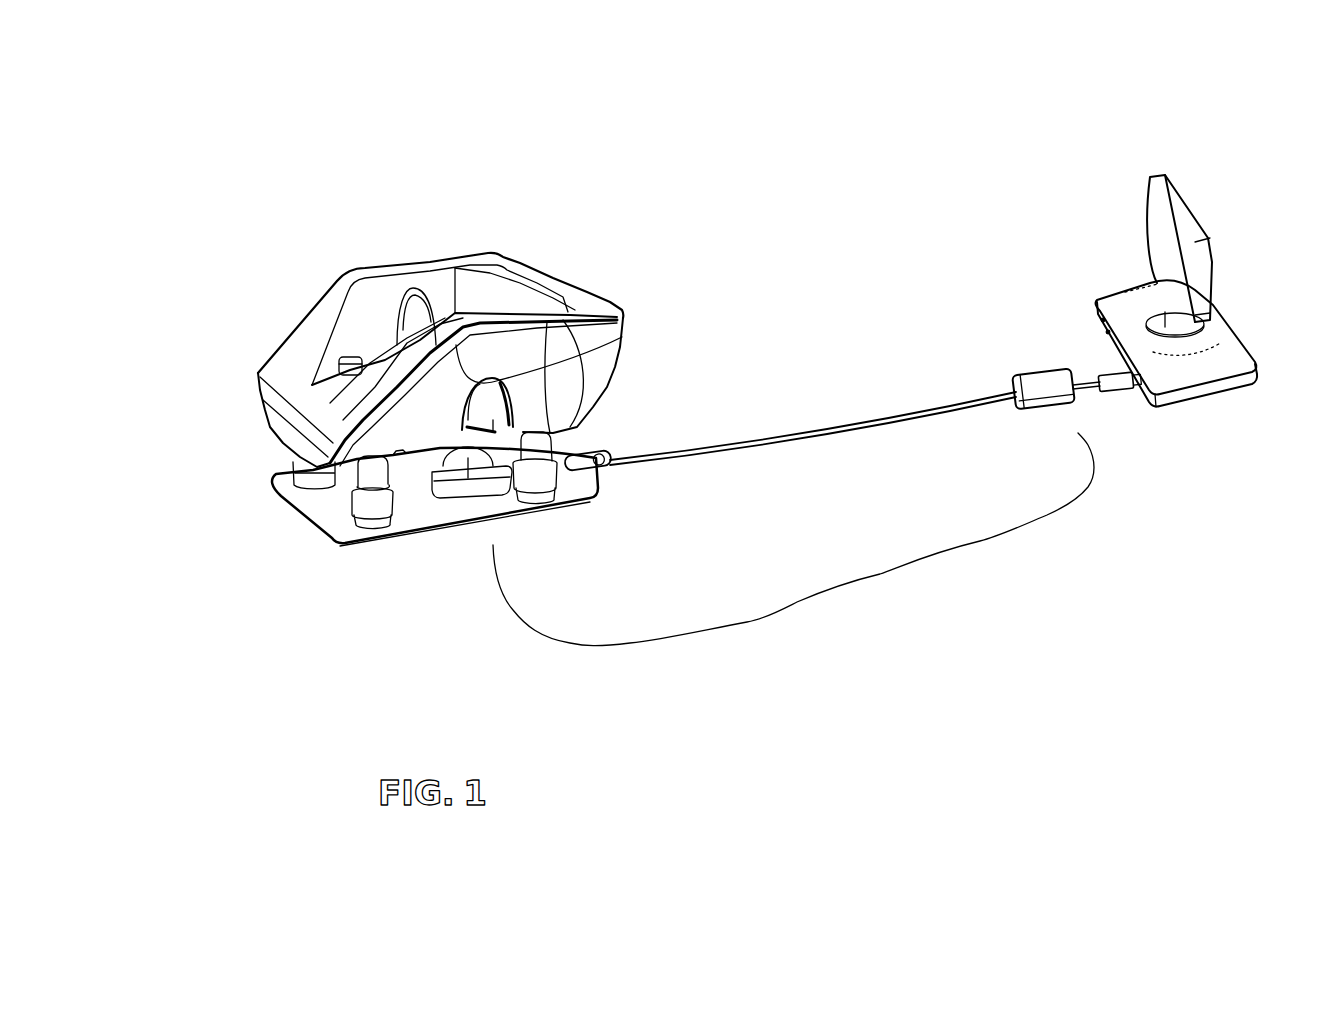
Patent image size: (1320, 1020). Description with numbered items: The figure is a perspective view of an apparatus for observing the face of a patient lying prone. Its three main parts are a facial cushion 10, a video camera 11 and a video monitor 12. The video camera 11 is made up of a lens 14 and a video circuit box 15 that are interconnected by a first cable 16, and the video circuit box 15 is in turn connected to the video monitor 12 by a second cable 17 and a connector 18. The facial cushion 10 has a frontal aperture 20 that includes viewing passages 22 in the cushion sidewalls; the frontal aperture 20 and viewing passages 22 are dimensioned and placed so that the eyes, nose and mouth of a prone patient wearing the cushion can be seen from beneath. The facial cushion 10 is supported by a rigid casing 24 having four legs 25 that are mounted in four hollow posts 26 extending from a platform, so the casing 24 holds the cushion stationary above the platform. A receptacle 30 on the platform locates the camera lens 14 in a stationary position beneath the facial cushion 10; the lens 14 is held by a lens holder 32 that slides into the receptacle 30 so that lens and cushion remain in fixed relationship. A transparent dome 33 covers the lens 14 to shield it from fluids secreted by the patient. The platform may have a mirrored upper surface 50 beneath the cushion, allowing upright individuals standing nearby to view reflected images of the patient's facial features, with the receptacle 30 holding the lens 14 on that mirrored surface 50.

The facial cushion 10 is at (560, 282).
The video camera 11 is at (793, 542).
The video monitor 12 is at (1160, 235).
The lens 14 is at (427, 507).
The video circuit box 15 is at (1053, 400).
The first cable 16 is at (912, 412).
The second cable 17 is at (1085, 387).
The connector 18 is at (1118, 388).
The frontal aperture 20 is at (395, 296).
The viewing passages 22 is at (431, 313).
The rigid casing 24 is at (600, 378).
The legs 25 is at (363, 483).
The hollow posts 26 is at (357, 520).
The receptacle 30 is at (468, 463).
The lens holder 32 is at (580, 467).
The transparent dome 33 is at (468, 485).
The mirrored upper surface 50 is at (347, 535).